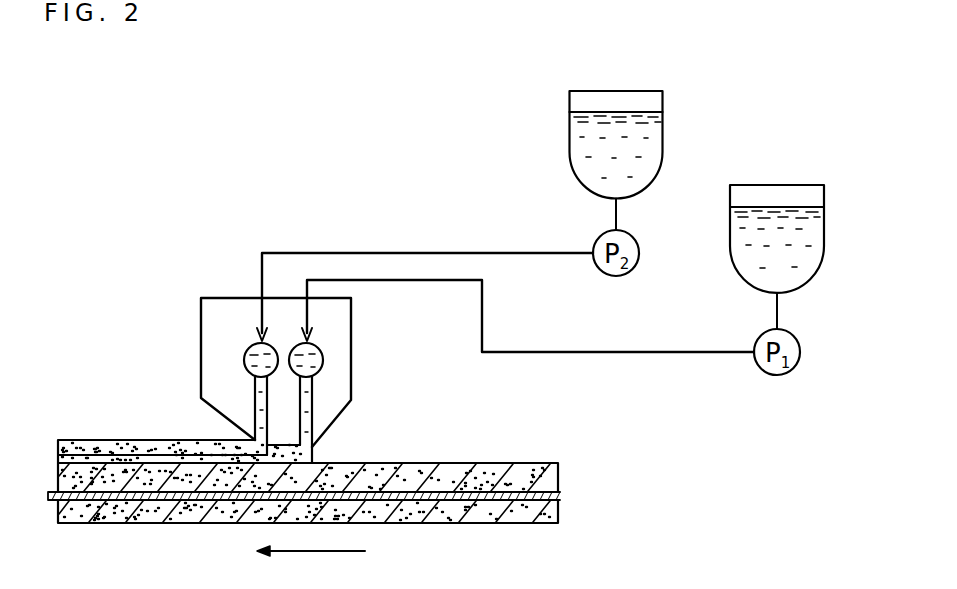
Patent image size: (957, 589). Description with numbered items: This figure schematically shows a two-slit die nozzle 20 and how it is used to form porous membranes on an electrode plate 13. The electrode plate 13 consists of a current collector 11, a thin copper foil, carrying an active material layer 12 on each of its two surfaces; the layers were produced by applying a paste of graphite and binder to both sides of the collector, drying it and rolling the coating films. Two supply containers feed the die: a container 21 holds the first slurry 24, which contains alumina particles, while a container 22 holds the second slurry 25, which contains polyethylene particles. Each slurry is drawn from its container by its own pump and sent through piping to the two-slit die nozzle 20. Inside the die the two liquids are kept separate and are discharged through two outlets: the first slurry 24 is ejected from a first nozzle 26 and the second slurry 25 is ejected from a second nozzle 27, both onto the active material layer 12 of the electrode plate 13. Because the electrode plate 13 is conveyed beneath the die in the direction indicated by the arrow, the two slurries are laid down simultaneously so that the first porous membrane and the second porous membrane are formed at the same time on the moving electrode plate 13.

The current collector 11 is at (560, 496).
The active material layer 12 is at (544, 478).
The electrode plate 13 is at (340, 483).
The two-slit die nozzle 20 is at (215, 270).
The container 21 is at (730, 255).
The container 22 is at (570, 141).
The first slurry 24 is at (764, 207).
The second slurry 25 is at (616, 112).
The first nozzle 26 is at (312, 410).
The second nozzle 27 is at (255, 401).